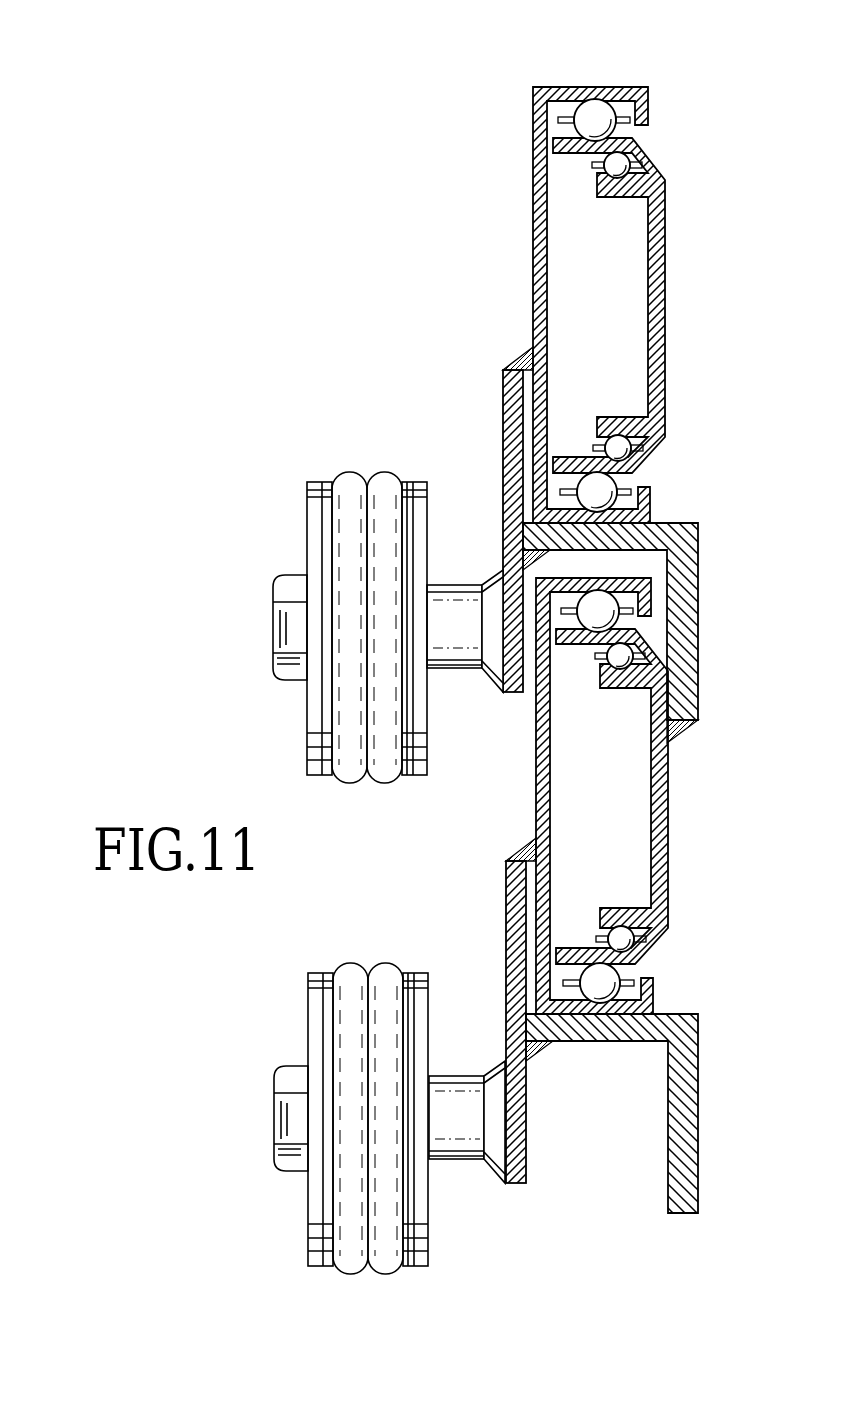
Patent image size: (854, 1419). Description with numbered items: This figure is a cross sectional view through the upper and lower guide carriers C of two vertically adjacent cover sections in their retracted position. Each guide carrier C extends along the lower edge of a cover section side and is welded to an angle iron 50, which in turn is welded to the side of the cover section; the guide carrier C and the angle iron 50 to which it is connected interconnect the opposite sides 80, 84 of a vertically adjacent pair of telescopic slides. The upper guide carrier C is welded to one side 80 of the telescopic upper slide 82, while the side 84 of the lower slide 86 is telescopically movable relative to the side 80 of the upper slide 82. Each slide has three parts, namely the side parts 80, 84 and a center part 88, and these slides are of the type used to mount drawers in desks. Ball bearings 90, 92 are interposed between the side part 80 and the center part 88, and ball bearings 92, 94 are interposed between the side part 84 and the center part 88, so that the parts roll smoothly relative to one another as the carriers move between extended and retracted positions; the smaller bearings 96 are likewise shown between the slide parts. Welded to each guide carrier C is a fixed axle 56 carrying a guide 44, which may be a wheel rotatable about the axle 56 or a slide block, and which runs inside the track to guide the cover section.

The guide 44 is at (350, 532).
The angle iron 50 is at (692, 638).
The axle 56 is at (460, 642).
The side 80 is at (535, 237).
The upper slide 82 is at (522, 189).
The side 84 is at (663, 307).
The slide 86 is at (686, 768).
The center part 88 is at (567, 300).
The ball bearing 90 is at (596, 118).
The ball bearing 92 is at (605, 490).
The ball bearing 94 is at (633, 152).
The lower small ball bearing 96 is at (628, 428).
The guide carrier C is at (502, 437).